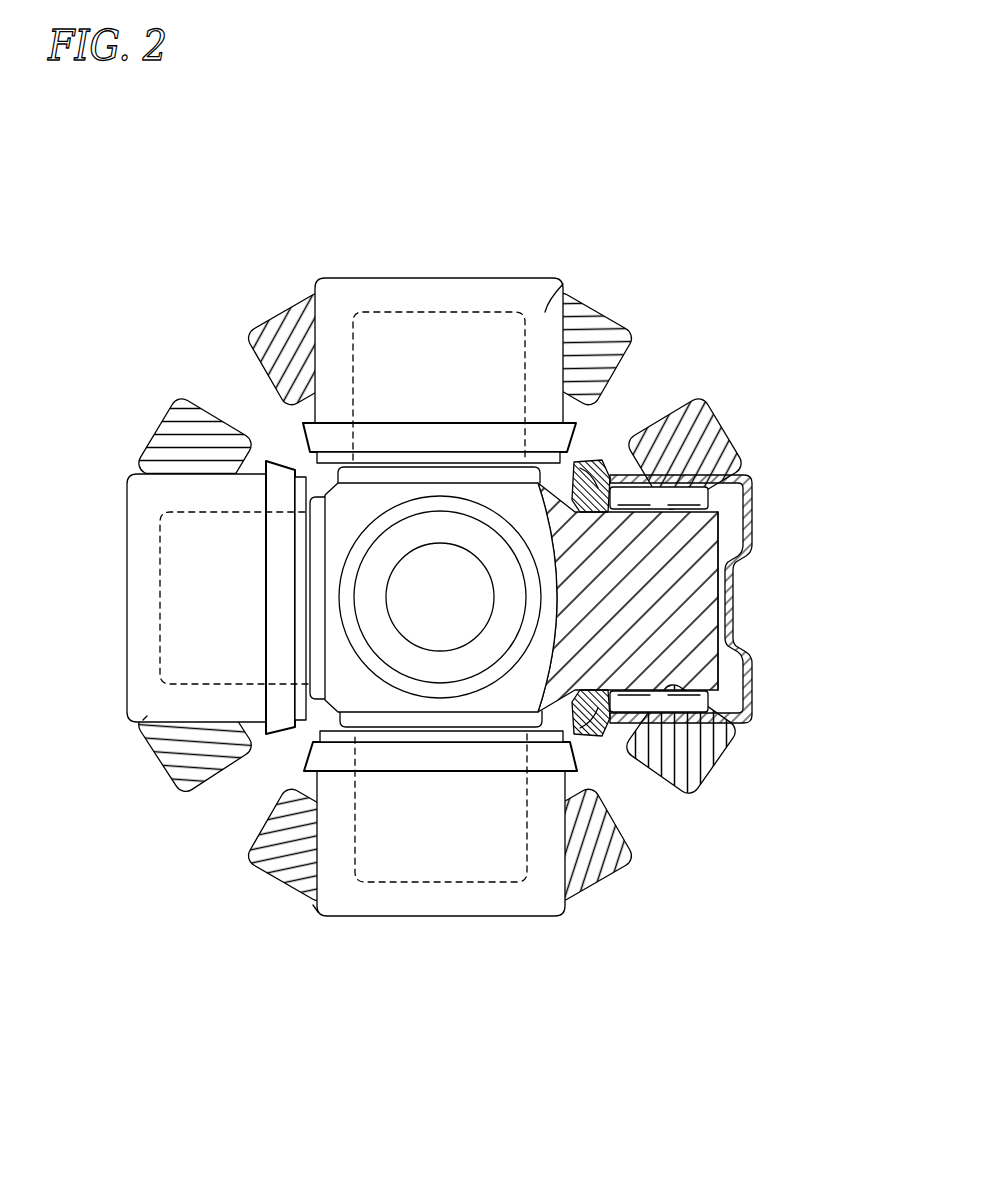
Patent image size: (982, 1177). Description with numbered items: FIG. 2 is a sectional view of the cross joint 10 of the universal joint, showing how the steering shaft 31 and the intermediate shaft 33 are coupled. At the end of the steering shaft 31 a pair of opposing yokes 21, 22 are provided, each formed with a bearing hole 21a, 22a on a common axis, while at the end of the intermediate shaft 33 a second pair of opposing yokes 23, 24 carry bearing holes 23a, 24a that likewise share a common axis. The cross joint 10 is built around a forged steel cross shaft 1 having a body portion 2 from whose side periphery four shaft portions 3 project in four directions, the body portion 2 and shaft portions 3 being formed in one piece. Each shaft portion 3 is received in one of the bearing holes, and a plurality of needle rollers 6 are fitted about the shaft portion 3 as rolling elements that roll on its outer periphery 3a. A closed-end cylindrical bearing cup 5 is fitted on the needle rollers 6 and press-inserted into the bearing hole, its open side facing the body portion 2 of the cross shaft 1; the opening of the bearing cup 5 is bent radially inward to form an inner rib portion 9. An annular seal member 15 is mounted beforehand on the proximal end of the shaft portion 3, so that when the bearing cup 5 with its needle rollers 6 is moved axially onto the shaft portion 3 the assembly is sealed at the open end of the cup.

The cross shaft 1 is at (377, 702).
The body portion 2 is at (503, 700).
The shaft portion 3 is at (353, 350).
The outer periphery 3a is at (690, 702).
The bearing cup 5 is at (410, 318).
The needle roller 6 is at (713, 752).
The inner rib portion 9 is at (578, 730).
The cross joint 10 is at (641, 281).
The annular seal member 15 is at (595, 456).
The yoke 21 is at (705, 418).
The bearing hole 21a is at (722, 460).
The yoke 22 is at (158, 748).
The bearing hole 22a is at (145, 715).
The yoke 23 is at (281, 331).
The bearing hole 23a is at (552, 285).
The yoke 24 is at (278, 885).
The bearing hole 24a is at (318, 903).
The steering shaft 31 is at (727, 431).
The intermediate shaft 33 is at (592, 296).